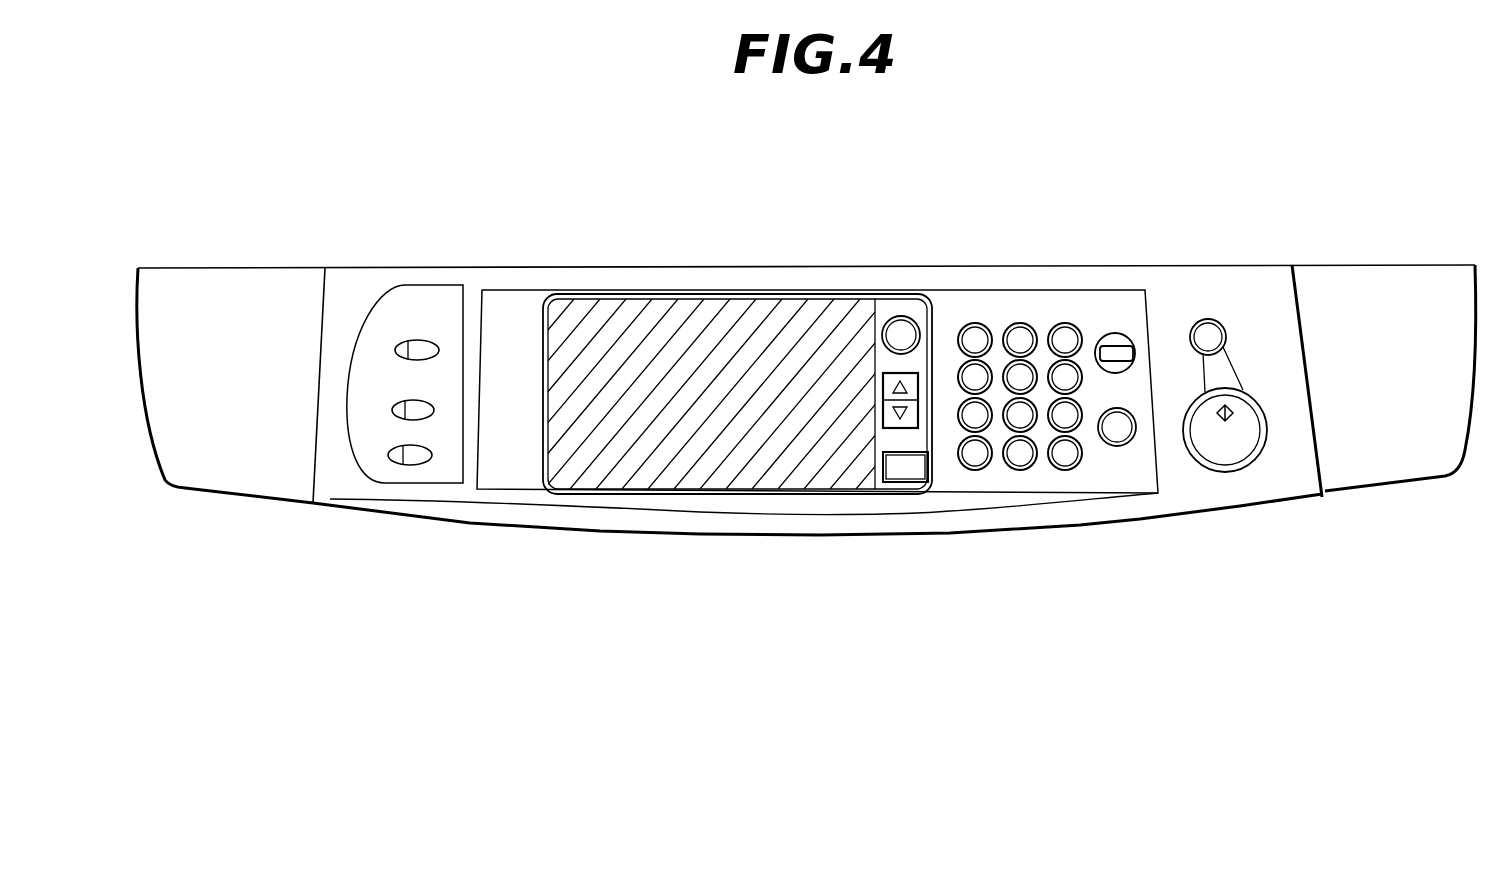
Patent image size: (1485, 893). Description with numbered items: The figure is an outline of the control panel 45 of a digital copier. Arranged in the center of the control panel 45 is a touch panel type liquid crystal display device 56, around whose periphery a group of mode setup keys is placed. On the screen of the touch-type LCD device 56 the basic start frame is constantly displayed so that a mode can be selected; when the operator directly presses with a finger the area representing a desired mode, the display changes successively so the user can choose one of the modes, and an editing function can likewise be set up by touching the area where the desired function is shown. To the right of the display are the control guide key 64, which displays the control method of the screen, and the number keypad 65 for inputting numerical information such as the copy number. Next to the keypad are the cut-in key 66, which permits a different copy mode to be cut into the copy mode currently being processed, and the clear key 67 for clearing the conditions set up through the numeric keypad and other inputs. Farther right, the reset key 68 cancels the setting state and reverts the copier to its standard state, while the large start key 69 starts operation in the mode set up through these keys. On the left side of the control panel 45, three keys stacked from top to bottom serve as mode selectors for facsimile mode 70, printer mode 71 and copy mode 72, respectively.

The control panel 45 is at (1370, 266).
The touch panel type liquid crystal display device 56 is at (740, 315).
The control guide key 64 is at (918, 320).
The number keypad 65 is at (1028, 323).
The cut-in key 66 is at (1137, 343).
The clear key 67 is at (1117, 447).
The reset key 68 is at (1210, 318).
The start key 69 is at (1237, 472).
The facsimile mode selector 70 is at (397, 350).
The printer mode selector 71 is at (392, 410).
The copy mode selector 72 is at (413, 466).